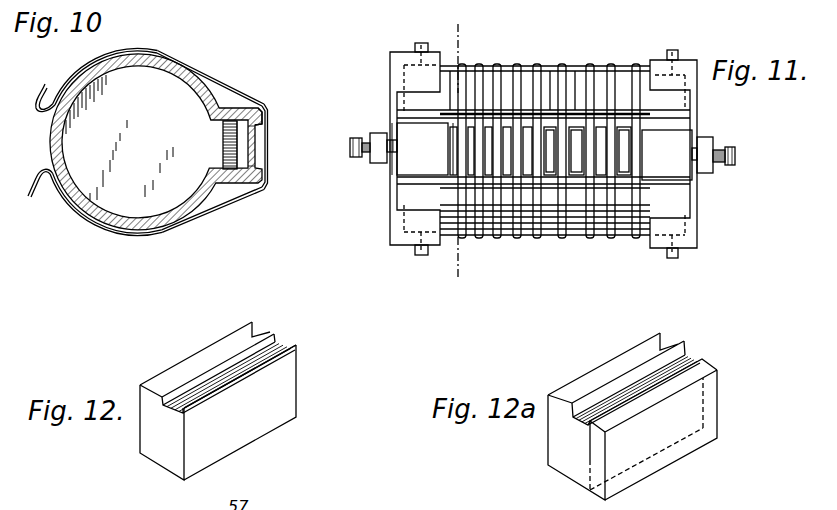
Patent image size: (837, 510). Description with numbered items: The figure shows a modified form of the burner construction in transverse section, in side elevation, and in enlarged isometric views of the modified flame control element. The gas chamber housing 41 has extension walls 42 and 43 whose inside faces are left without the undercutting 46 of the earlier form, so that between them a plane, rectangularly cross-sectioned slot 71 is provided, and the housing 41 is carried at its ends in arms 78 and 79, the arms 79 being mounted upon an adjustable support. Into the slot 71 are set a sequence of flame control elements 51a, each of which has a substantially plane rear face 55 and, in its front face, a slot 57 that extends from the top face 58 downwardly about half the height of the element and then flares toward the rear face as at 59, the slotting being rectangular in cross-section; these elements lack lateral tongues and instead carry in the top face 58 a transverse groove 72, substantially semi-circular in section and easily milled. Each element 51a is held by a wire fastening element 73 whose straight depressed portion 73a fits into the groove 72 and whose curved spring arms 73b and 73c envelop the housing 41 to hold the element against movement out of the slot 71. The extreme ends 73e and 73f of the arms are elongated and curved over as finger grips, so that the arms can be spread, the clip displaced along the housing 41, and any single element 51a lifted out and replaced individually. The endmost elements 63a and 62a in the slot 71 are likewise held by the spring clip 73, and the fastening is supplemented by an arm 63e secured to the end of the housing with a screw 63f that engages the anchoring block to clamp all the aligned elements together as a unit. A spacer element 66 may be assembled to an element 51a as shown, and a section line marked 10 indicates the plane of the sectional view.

In FIG. 11, the section line 10- 10 is at (483, 275).
In FIG. 10, the gas chamber housing 41 is at (168, 73).
In FIG. 10, the extension wall 42 is at (235, 116).
In FIG. 10, the extension wall 43 is at (235, 185).
In FIG. 10, the undercut 46 is at (140, 197).
In FIG. 10, the flame control element 51a is at (252, 158).
In FIG. 11, the flame control element 51a is at (557, 160).
In FIG. 12, the flame control element 51a is at (139, 441).
In FIG. 12A, the flame control element 51a is at (553, 438).
In FIG. 11, the rear face 55 is at (515, 170).
In FIG. 11, the slot 57 is at (502, 132).
In FIG. 12, the slot 57 is at (184, 378).
In FIG. 12A, the slot 57 is at (613, 370).
In FIG. 12, the top face 58 is at (266, 331).
In FIG. 12A, the top face 58 is at (677, 342).
In FIG. 10, the flared portion of slot 59 is at (242, 153).
In FIG. 11, the end element 62a is at (667, 155).
In FIG. 11, the end element 63a is at (422, 149).
In FIG. 11, the arm 63e is at (376, 132).
In FIG. 11, the screw 63f is at (350, 160).
In FIG. 12A, the spacer element 66 is at (722, 430).
In FIG. 10, the slot 71 is at (222, 135).
In FIG. 12, the transverse groove 72 is at (277, 347).
In FIG. 12A, the transverse groove 72 is at (688, 357).
In FIG. 10, the wire fastening element 73 is at (200, 218).
In FIG. 11, the wire fastening element 73 is at (564, 62).
In FIG. 10, the straight depressed portion 73a is at (262, 140).
In FIG. 10, the curved arm 73b is at (131, 53).
In FIG. 10, the curved arm 73c is at (100, 220).
In FIG. 10, the end 73e is at (31, 190).
In FIG. 10, the end 73f is at (44, 90).
In FIG. 11, the arm 78 is at (382, 53).
In FIG. 11, the arm 79 is at (693, 58).